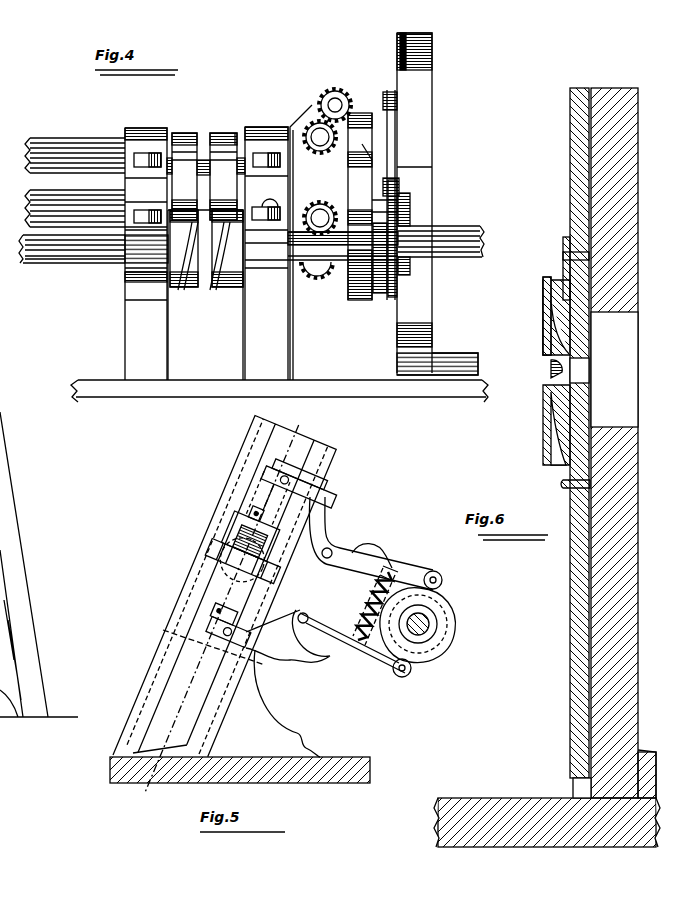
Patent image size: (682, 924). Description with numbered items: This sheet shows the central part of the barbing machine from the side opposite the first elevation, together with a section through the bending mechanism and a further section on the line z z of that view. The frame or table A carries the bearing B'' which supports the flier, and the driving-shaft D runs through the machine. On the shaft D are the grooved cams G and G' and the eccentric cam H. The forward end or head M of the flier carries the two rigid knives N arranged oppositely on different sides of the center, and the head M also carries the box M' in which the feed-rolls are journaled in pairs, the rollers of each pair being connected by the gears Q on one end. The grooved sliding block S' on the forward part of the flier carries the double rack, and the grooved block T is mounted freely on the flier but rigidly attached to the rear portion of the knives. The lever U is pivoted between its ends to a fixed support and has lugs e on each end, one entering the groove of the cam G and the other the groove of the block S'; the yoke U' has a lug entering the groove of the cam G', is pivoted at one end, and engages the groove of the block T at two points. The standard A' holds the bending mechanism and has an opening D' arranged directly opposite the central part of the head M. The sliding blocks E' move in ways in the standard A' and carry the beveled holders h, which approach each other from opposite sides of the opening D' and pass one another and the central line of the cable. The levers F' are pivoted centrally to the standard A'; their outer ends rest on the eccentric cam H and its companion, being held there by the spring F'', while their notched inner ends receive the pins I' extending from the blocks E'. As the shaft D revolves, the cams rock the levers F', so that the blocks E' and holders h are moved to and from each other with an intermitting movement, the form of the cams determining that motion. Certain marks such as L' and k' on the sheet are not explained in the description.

In FIG. 4, the frame or table A is at (279, 264).
In FIG. 5, the frame or table A is at (240, 760).
In FIG. 6, the frame or table A is at (547, 808).
In FIG. 4, the standard A' is at (437, 204).
In FIG. 5, the standard A' is at (277, 703).
In FIG. 6, the standard A' is at (624, 443).
In FIG. 4, the bearing B'' is at (151, 254).
In FIG. 4, the driving-shaft D is at (251, 245).
In FIG. 5, the driving-shaft D is at (444, 615).
In FIG. 5, the opening D' is at (245, 555).
In FIG. 6, the opening D' is at (614, 369).
In FIG. 4, the sliding block E' is at (404, 51).
In FIG. 5, the sliding block E' is at (222, 608).
In FIG. 6, the sliding block E' is at (557, 443).
In FIG. 4, the lever F' is at (385, 235).
In FIG. 5, the lever F' is at (344, 587).
In FIG. 5, the spring F'' is at (366, 606).
In FIG. 4, the grooved cam G is at (227, 295).
In FIG. 4, the grooved cam G' is at (205, 295).
In FIG. 4, the eccentric cam H is at (406, 206).
In FIG. 5, the eccentric cam H is at (418, 623).
In FIG. 4, the pin I' is at (384, 186).
In FIG. 5, the clamp L' is at (300, 481).
In FIG. 4, the head of the flier M is at (362, 159).
In FIG. 4, the box M' is at (331, 242).
In FIG. 4, the knife N is at (366, 140).
In FIG. 4, the gear Q is at (320, 274).
In FIG. 4, the grooved sliding block S' is at (237, 123).
In FIG. 4, the grooved block T is at (203, 148).
In FIG. 4, the lever U is at (227, 176).
In FIG. 4, the yoke U' is at (182, 176).
In FIG. 4, the lug e is at (218, 256).
In FIG. 4, the lever e' is at (185, 256).
In FIG. 6, the holder h is at (556, 386).
In FIG. 4, the gear k' is at (373, 259).
In FIG. 5, the section line z is at (219, 610).